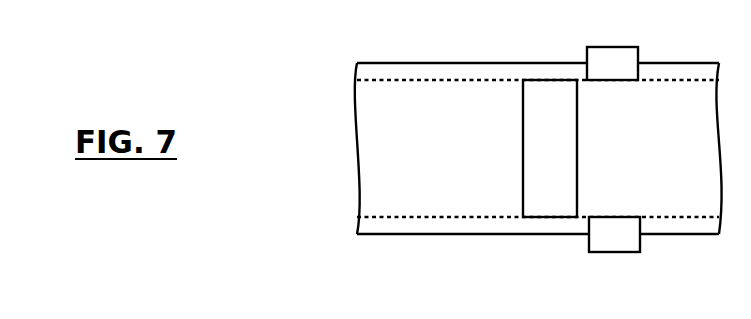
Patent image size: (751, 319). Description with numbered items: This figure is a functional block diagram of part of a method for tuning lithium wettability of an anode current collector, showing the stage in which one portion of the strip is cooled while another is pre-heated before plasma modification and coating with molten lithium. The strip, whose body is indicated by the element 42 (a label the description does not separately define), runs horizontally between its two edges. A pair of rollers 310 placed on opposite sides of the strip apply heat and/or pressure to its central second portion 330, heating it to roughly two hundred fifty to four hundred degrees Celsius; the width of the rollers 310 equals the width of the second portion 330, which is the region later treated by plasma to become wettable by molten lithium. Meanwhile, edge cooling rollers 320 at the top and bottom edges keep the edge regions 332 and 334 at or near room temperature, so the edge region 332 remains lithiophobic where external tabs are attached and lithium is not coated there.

The elongate body 42 is at (377, 131).
The rollers 310 is at (523, 138).
The edge cooling rollers 320 is at (587, 55).
The second portion 330 is at (380, 112).
The edge region 332 is at (449, 68).
The edge region 334 is at (432, 225).